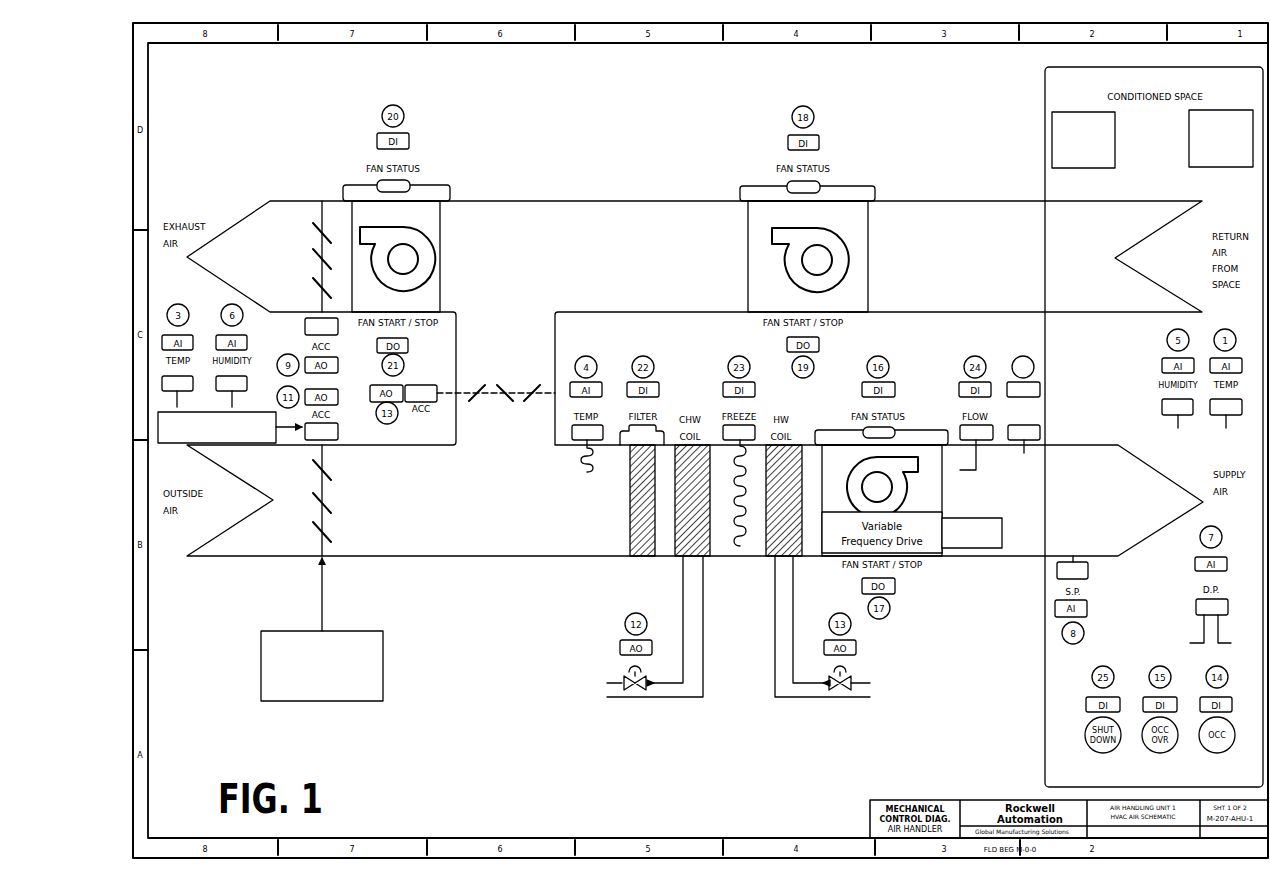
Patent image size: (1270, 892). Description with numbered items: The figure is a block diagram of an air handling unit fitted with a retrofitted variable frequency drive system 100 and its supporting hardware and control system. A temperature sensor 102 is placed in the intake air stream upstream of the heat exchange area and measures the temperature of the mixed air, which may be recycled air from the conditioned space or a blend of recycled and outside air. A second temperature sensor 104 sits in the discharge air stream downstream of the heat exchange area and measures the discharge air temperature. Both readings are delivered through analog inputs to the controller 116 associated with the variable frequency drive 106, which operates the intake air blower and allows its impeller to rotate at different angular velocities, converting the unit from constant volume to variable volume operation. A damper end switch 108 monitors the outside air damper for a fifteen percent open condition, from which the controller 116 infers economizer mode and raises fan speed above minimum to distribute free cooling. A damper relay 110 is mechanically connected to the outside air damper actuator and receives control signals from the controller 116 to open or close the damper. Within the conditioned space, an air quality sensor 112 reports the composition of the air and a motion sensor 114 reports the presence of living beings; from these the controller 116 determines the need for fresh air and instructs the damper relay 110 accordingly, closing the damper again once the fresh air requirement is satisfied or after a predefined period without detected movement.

The variable frequency drive system 100 is at (652, 112).
The temperature sensor 102 is at (557, 447).
The temperature sensor 104 is at (1040, 432).
The variable frequency drive 106 is at (888, 510).
The damper end switch 108 is at (383, 665).
The damper relay 110 is at (210, 443).
The air quality sensor 112 is at (1052, 140).
The motion sensor 114 is at (1220, 168).
The controller 116 is at (972, 548).